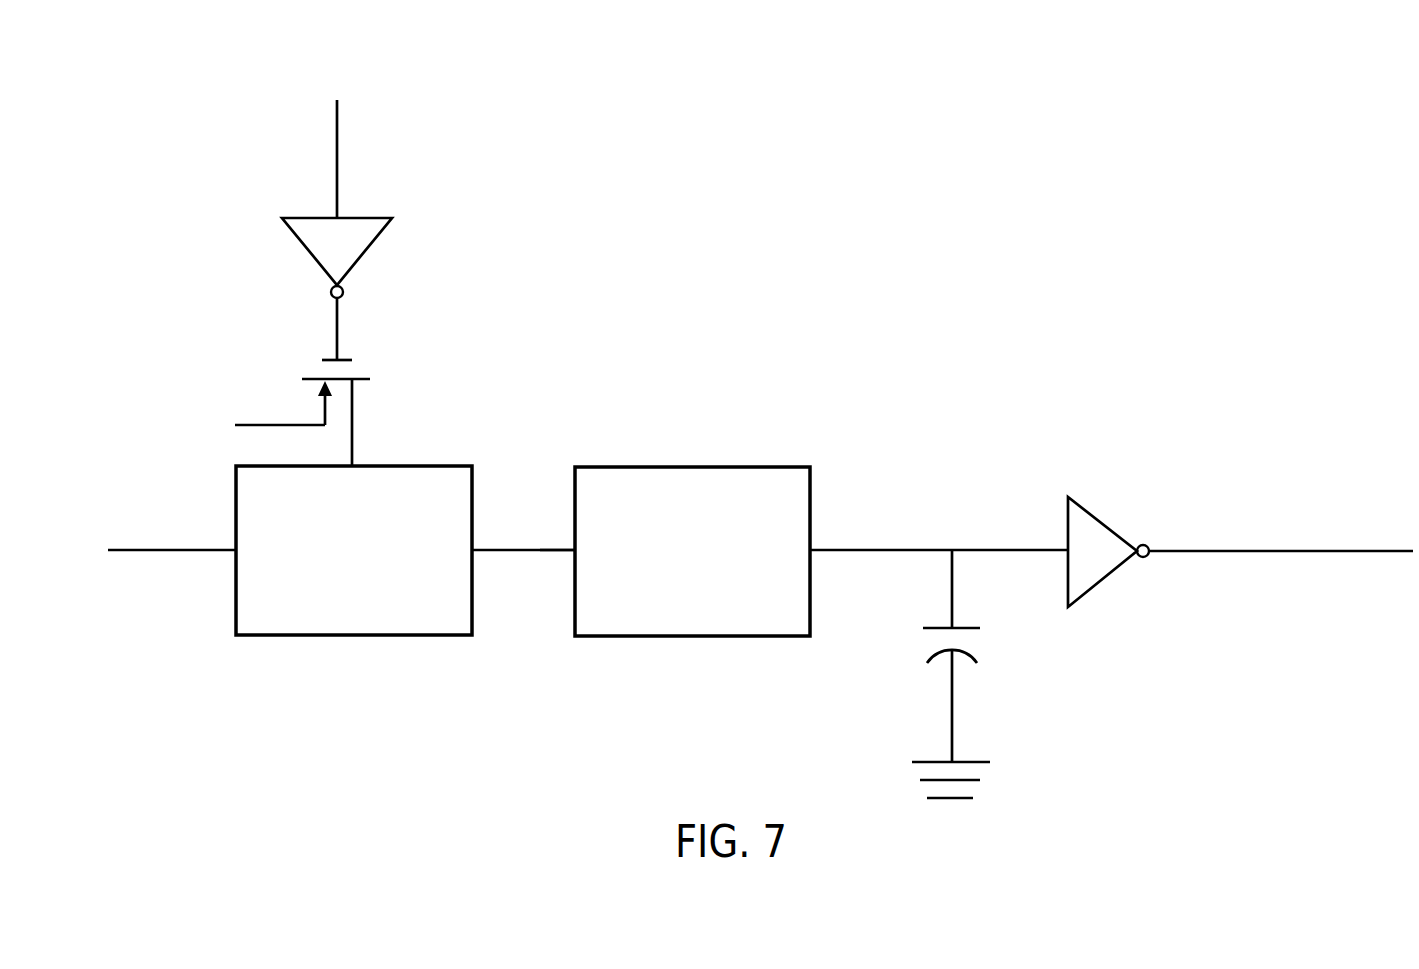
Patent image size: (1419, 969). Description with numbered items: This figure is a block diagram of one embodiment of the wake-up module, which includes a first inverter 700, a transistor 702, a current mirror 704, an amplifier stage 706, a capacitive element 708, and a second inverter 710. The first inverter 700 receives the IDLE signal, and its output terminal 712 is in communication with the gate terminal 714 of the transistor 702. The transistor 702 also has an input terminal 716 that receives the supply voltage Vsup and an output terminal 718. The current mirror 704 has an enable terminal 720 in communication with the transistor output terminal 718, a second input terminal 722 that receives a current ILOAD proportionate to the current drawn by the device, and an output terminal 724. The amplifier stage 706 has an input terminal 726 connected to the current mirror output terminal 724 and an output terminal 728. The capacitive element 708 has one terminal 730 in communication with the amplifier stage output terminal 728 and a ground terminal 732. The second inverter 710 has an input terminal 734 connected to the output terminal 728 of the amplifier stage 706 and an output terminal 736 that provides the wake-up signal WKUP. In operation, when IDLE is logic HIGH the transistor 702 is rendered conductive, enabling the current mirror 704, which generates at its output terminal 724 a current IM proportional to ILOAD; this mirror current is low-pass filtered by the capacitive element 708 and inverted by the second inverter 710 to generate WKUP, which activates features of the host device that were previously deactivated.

The first inverter 700 is at (258, 211).
The transistor 702 is at (293, 377).
The current mirror 704 is at (373, 594).
The amplifier stage 706 is at (713, 594).
The capacitive element 708 is at (1006, 667).
The second inverter 710 is at (1133, 600).
The output terminal of the first inverter 712 is at (330, 296).
The gate terminal 714 is at (336, 357).
The input terminal 716 is at (320, 388).
The output terminal 718 is at (354, 387).
The enable terminal 720 is at (354, 460).
The second input terminal 722 is at (235, 551).
The output terminal 724 is at (478, 552).
The input terminal 726 is at (573, 548).
The output terminal 728 is at (814, 548).
The terminal 730 is at (952, 550).
The ground terminal 732 is at (983, 761).
The input terminal 734 is at (1066, 550).
The output terminal 736 is at (1152, 547).